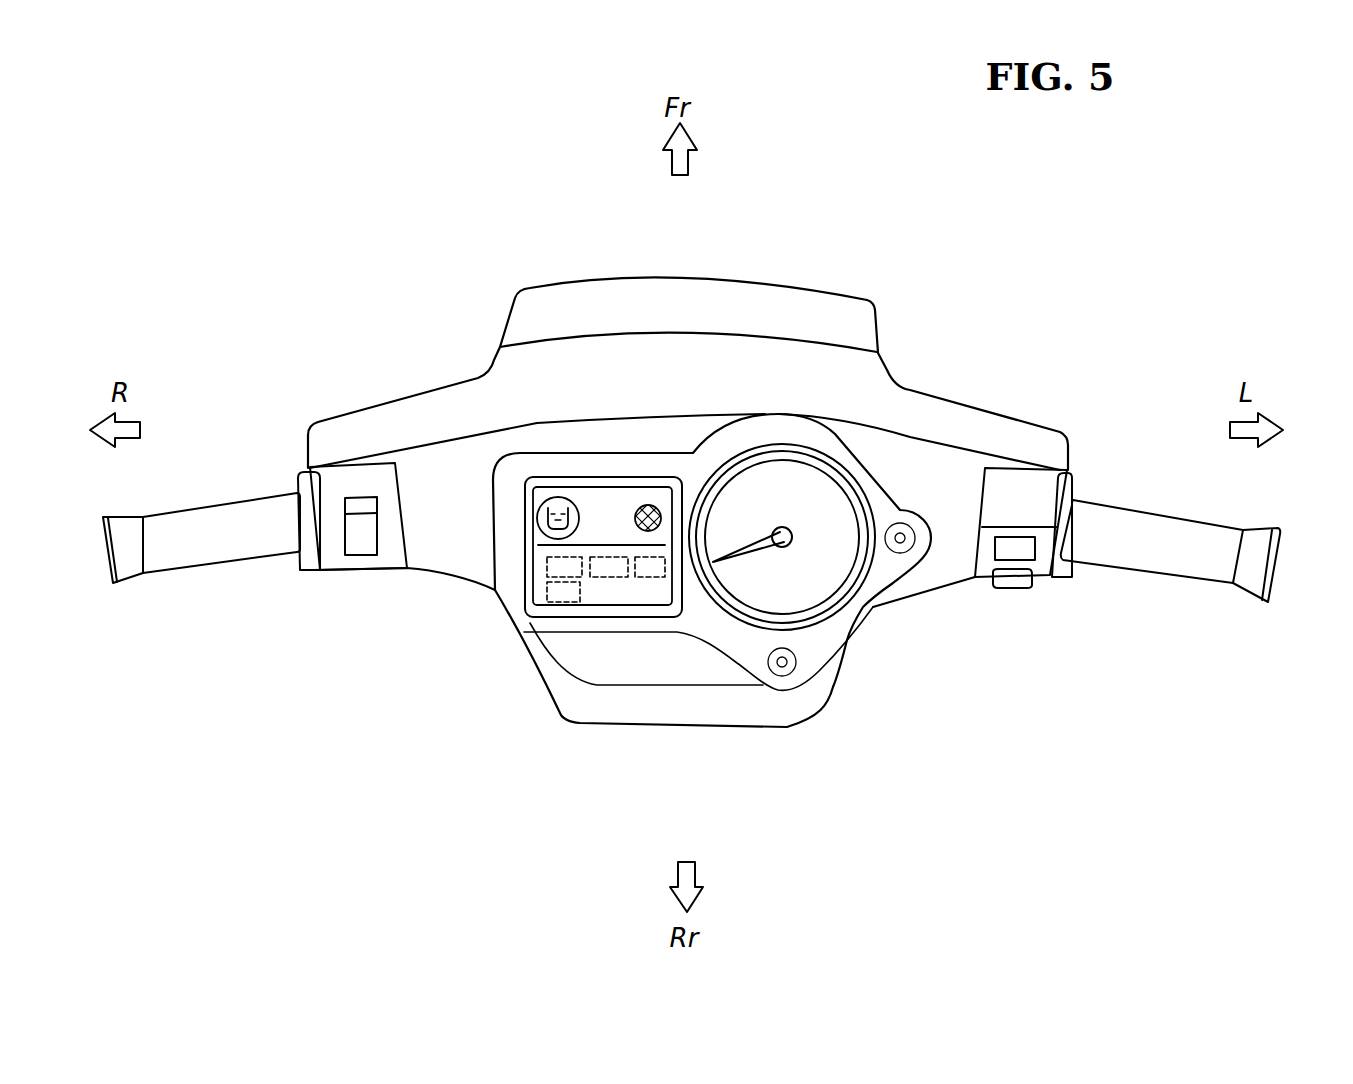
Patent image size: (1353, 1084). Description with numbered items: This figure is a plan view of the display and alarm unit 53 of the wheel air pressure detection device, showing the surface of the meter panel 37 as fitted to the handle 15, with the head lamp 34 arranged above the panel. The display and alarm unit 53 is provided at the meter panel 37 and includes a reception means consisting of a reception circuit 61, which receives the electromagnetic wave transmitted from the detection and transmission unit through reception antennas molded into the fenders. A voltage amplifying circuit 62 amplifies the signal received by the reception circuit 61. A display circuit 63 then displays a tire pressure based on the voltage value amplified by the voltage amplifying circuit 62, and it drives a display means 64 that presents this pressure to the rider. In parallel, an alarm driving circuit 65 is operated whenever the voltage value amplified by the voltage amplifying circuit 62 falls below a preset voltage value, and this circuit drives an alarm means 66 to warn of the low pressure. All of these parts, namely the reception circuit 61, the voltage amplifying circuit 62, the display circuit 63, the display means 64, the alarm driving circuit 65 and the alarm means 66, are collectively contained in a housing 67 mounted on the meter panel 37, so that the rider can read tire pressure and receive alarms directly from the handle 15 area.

The handle 15 is at (1103, 503).
The head lamp 34 is at (790, 287).
The meter panel 37 is at (878, 466).
The display and alarm unit 53 is at (596, 455).
The reception circuit 61 is at (547, 568).
The voltage amplifying circuit 62 is at (608, 580).
The display circuit 63 is at (648, 580).
The display means 64 is at (558, 497).
The alarm driving circuit 65 is at (550, 595).
The alarm means 66 is at (648, 505).
The housing 67 is at (522, 508).